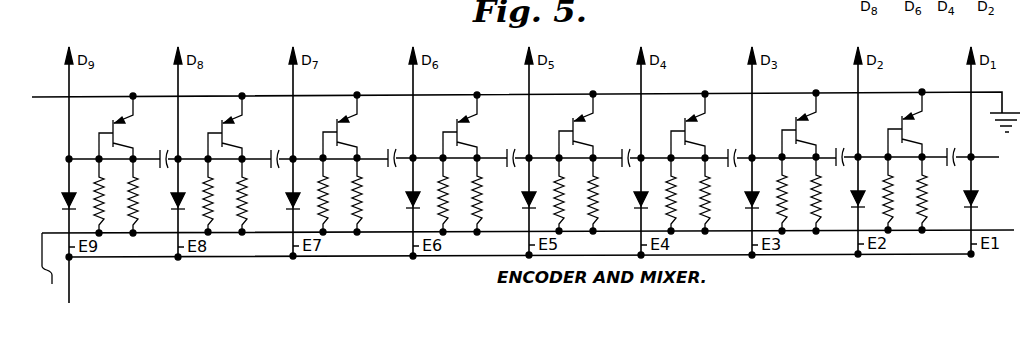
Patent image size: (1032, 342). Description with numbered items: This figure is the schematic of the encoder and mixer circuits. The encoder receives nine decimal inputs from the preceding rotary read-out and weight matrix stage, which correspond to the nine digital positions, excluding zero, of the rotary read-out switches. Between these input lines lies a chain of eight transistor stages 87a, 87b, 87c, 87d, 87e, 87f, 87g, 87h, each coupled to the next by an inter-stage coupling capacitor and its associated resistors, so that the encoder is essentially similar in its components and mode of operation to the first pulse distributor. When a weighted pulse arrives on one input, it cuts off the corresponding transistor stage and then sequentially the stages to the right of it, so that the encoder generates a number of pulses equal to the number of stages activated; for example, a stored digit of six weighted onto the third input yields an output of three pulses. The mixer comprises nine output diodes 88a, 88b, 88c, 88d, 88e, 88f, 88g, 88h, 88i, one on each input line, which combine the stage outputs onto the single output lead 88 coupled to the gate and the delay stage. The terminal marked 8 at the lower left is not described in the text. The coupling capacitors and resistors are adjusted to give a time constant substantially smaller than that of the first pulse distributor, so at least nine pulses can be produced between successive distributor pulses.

The transistor stage 87a is at (924, 124).
The transistor stage 87b is at (818, 125).
The transistor stage 87c is at (707, 126).
The transistor stage 87d is at (595, 126).
The transistor stage 87e is at (479, 126).
The transistor stage 87f is at (358, 126).
The transistor stage 87g is at (244, 127).
The transistor stage 87h is at (135, 127).
The output diode 88a is at (966, 199).
The output diode 88b is at (853, 199).
The output diode 88c is at (747, 200).
The output diode 88d is at (636, 200).
The output diode 88e is at (524, 200).
The output diode 88f is at (408, 200).
The output diode 88g is at (288, 201).
The output diode 88h is at (173, 201).
The output diode 88i is at (62, 201).
The output lead 88 is at (69, 278).
The input terminal 8 is at (53, 289).